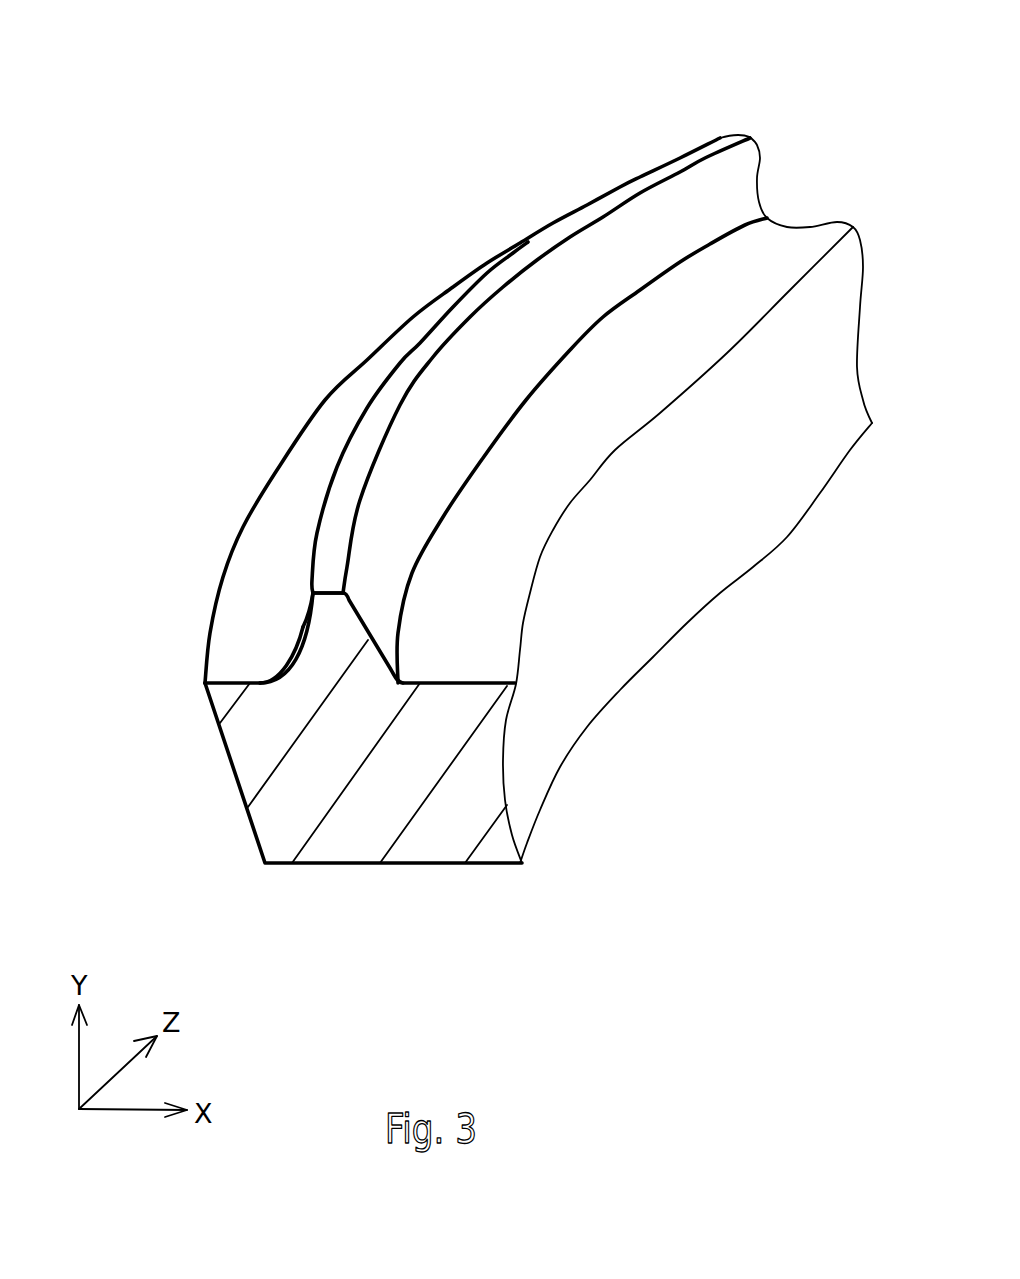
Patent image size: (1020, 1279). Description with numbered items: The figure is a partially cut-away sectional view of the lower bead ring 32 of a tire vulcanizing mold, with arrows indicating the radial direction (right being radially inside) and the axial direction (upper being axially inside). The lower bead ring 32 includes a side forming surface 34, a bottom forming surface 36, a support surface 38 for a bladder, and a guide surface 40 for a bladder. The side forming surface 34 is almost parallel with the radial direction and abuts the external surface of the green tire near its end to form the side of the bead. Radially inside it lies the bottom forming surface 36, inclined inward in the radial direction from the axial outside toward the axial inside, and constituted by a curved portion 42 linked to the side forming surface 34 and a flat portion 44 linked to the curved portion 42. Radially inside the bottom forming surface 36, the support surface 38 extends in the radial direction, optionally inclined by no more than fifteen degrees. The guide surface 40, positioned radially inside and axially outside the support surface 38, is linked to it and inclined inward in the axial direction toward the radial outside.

The lower bead ring 32 is at (507, 163).
The side forming surface 34 is at (233, 678).
The bottom forming surface 36 is at (97, 475).
The support surface for a bladder 38 is at (362, 447).
The guide surface for a bladder 40 is at (723, 190).
The curved portion 42 is at (280, 667).
The flat portion 44 is at (300, 620).